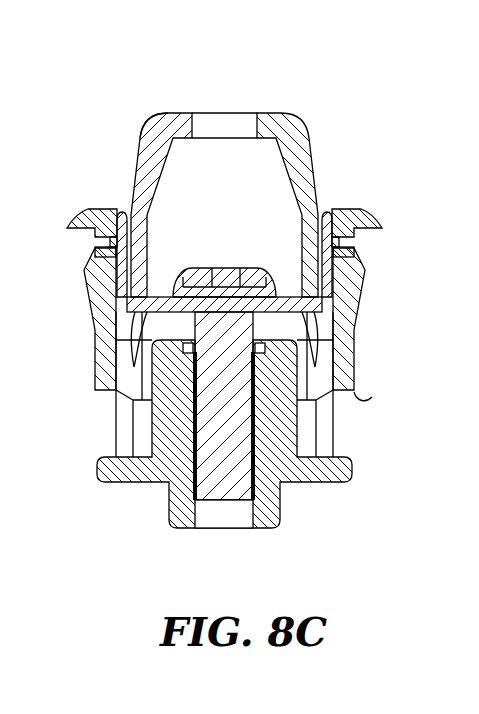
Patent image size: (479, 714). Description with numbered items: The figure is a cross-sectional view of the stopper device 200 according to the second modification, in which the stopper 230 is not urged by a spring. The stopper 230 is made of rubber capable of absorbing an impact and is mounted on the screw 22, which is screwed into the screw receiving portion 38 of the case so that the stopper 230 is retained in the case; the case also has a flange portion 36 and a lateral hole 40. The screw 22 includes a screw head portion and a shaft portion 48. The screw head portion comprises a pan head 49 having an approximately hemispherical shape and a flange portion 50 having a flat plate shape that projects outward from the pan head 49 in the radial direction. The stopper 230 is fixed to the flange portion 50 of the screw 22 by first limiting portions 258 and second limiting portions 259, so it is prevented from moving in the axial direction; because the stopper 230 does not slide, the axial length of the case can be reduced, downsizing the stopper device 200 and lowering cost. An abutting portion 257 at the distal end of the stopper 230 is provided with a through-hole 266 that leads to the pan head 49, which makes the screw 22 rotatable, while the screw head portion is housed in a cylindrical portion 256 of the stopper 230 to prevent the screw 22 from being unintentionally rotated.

The screw 22 is at (212, 443).
The flange portion 36 is at (85, 221).
The screw receiving portion 38 is at (265, 427).
The lateral hole 40 is at (356, 398).
The shaft portion 48 is at (251, 464).
The pan head 49 is at (230, 268).
The flange portion 50 is at (309, 307).
The stopper device 200 is at (236, 304).
The stopper 230 is at (300, 142).
The cylindrical portion 256 is at (118, 250).
The abutting portion 257 is at (172, 112).
The first limiting portions 258 is at (132, 320).
The second limiting portions 259 is at (133, 288).
The through-hole 266 is at (228, 113).